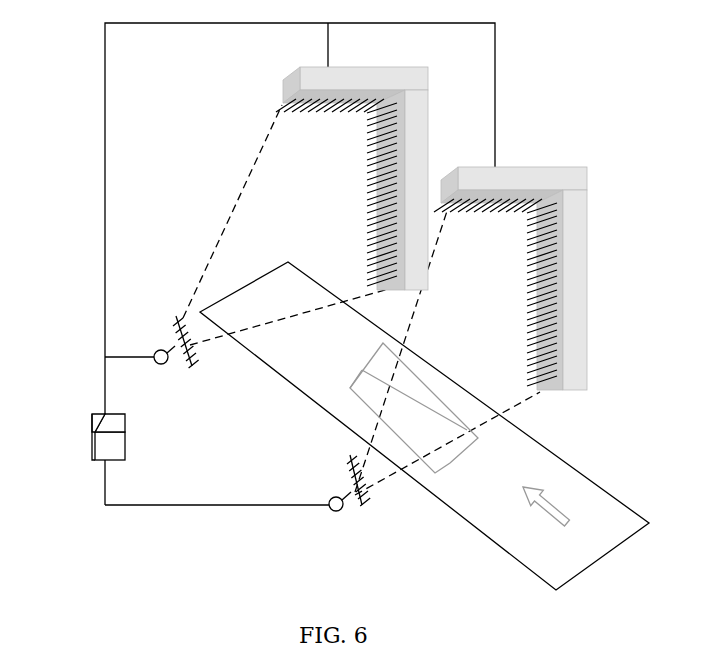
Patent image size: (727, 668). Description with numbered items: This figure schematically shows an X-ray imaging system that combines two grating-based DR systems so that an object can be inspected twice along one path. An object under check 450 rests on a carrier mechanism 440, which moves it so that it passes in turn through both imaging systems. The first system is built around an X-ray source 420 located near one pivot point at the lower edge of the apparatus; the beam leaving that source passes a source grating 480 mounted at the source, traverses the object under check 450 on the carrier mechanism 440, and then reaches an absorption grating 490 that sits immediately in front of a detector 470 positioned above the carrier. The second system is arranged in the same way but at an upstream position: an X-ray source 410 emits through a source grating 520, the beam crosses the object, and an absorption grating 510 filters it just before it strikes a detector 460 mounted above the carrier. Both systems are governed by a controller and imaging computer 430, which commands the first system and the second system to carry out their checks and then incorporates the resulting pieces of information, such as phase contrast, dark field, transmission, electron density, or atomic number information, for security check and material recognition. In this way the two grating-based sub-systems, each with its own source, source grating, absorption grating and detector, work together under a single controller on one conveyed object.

The X-ray source 410 is at (143, 357).
The X-ray source 420 is at (327, 504).
The controller and imaging computer 430 is at (88, 440).
The carrier mechanism 440 is at (583, 482).
The object under check 450 is at (412, 375).
The detector 460 is at (357, 72).
The detector 470 is at (543, 167).
The source grating 480 is at (362, 498).
The absorption grating 490 is at (527, 233).
The absorption grating 510 is at (363, 128).
The source grating 520 is at (192, 362).